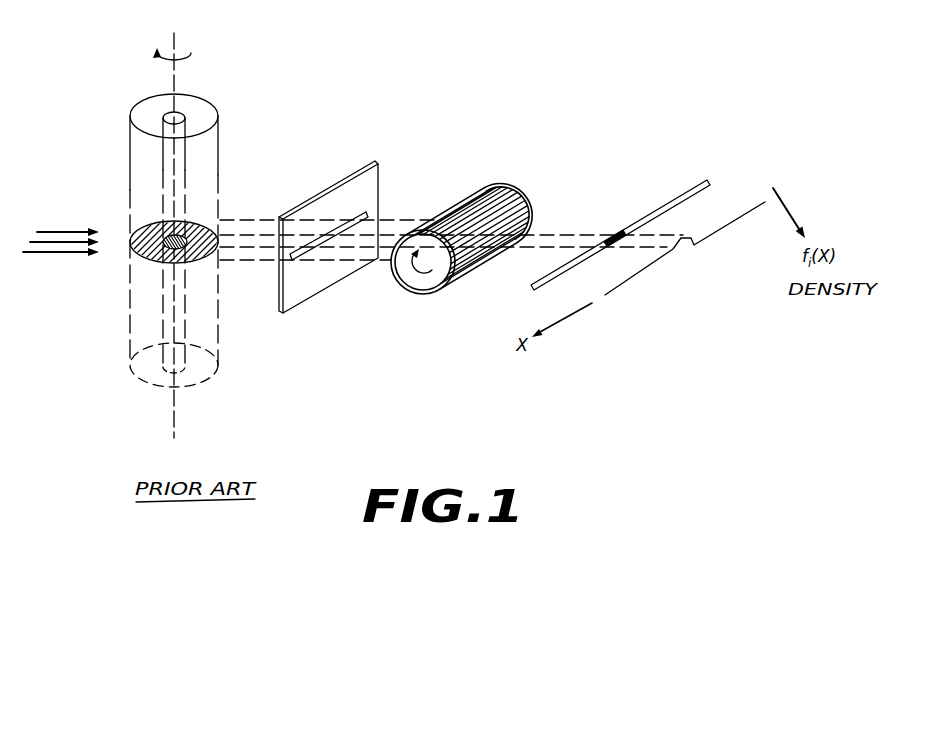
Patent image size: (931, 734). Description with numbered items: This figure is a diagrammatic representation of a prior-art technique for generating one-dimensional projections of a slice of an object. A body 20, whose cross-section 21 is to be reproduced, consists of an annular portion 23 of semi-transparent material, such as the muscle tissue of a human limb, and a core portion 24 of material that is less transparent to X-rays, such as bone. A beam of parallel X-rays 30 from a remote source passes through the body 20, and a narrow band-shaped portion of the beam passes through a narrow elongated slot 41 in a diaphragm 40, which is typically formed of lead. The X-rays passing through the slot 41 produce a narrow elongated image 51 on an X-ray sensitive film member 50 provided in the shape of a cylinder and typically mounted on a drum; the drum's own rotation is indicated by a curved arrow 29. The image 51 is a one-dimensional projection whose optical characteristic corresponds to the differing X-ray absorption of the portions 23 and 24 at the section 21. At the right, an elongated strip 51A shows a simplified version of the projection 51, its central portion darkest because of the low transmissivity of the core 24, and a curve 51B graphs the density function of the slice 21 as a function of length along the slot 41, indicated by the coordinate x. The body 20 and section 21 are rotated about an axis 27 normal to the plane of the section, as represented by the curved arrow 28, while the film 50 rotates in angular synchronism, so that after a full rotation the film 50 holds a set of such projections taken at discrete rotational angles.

The body 20 is at (197, 90).
The cross-section 21 is at (142, 258).
The annular portion 23 is at (205, 113).
The core portion 24 is at (132, 236).
The axis 27 is at (177, 43).
The curved arrow 28 is at (157, 56).
The drum rotation direction 29 is at (417, 278).
The beam of parallel X-rays 30 is at (50, 229).
The diaphragm 40 is at (373, 178).
The slot 41 is at (356, 268).
The film member 50 is at (518, 184).
The image 51 is at (461, 210).
The strip 51A is at (673, 200).
The curve 51B is at (743, 213).